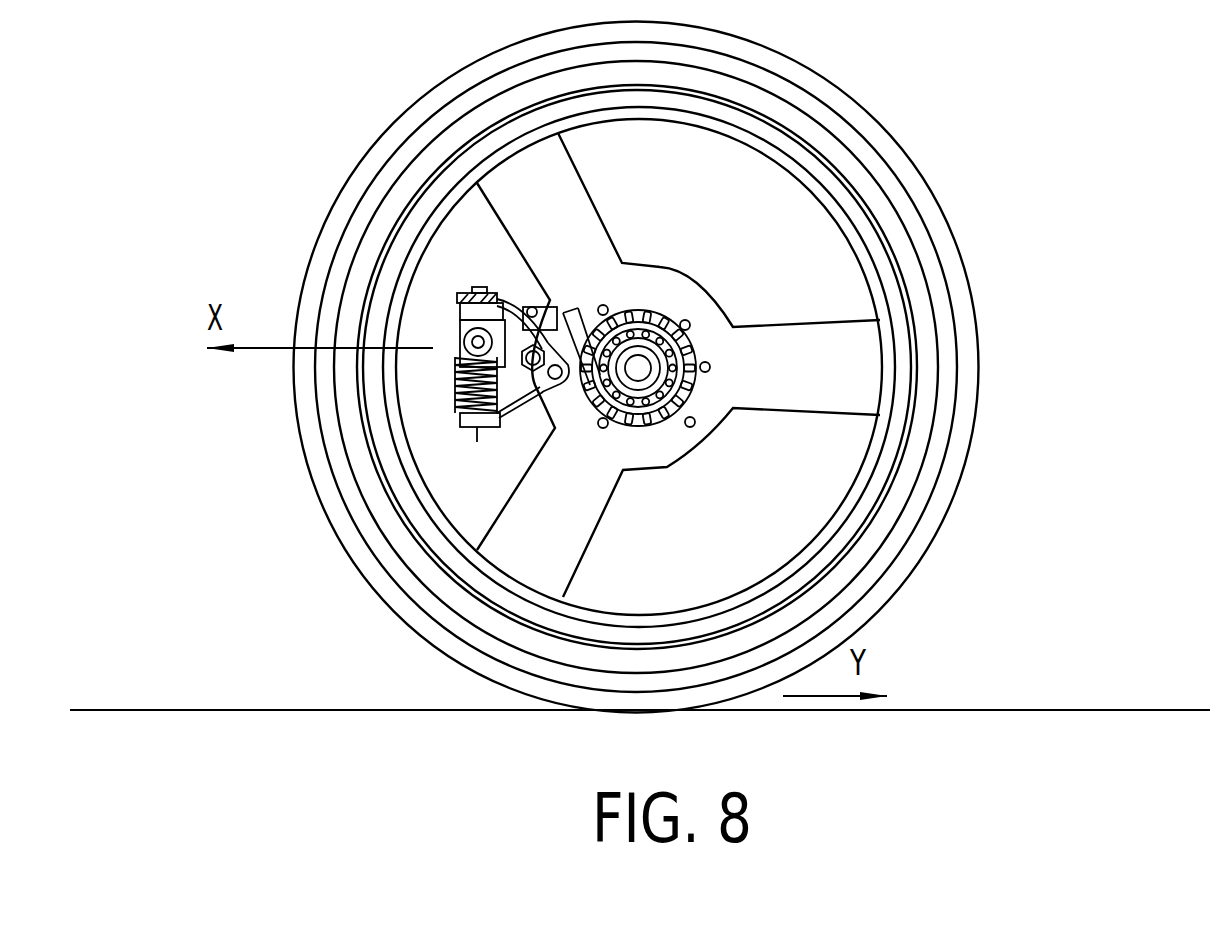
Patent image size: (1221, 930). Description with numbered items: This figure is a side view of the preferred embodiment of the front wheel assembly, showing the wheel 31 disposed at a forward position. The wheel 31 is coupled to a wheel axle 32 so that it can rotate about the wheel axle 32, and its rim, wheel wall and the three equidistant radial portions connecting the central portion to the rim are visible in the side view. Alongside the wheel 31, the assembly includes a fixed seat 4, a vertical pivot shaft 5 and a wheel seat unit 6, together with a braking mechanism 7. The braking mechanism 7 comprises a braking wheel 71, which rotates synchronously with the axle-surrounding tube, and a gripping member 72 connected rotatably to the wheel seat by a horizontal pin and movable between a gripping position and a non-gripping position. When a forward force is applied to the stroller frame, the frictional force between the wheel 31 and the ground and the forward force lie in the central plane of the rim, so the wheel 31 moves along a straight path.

The wheel 31 is at (912, 177).
The wheel axle 32 is at (676, 367).
The braking mechanism 7 is at (754, 475).
The braking wheel 71 is at (809, 330).
The gripping member 72 is at (719, 208).
The fixed seat 4 is at (371, 391).
The vertical pivot shaft 5 is at (430, 495).
The wheel seat unit 6 is at (456, 248).